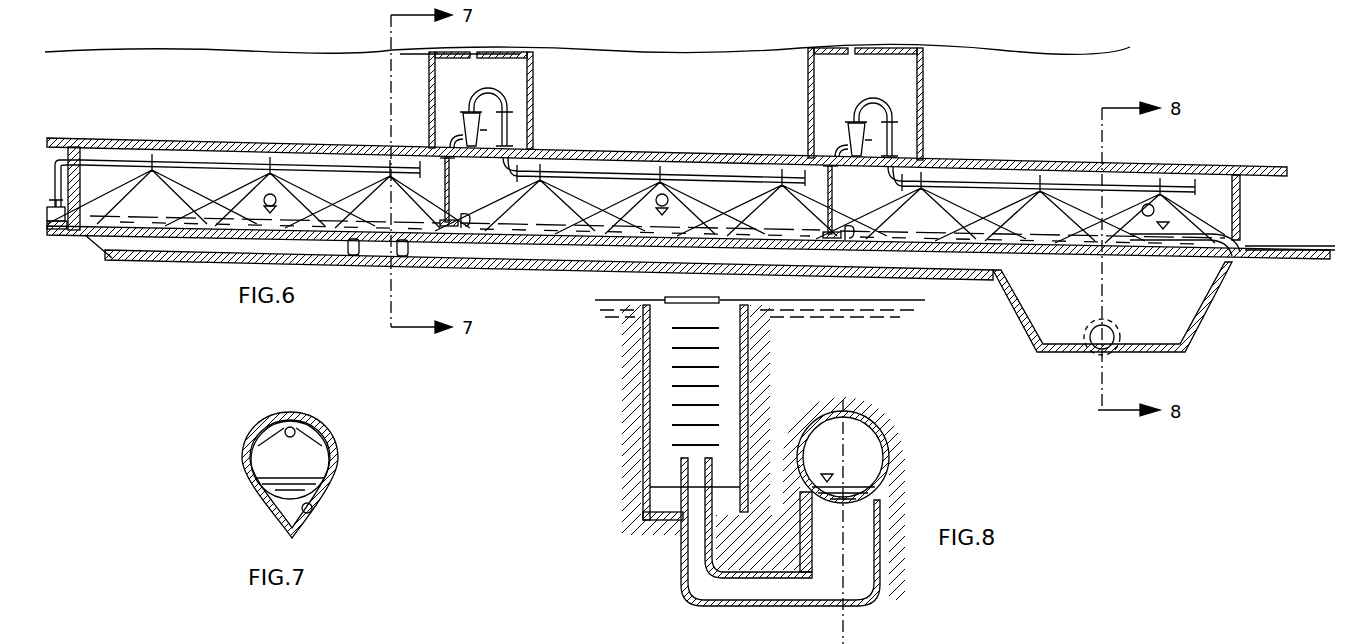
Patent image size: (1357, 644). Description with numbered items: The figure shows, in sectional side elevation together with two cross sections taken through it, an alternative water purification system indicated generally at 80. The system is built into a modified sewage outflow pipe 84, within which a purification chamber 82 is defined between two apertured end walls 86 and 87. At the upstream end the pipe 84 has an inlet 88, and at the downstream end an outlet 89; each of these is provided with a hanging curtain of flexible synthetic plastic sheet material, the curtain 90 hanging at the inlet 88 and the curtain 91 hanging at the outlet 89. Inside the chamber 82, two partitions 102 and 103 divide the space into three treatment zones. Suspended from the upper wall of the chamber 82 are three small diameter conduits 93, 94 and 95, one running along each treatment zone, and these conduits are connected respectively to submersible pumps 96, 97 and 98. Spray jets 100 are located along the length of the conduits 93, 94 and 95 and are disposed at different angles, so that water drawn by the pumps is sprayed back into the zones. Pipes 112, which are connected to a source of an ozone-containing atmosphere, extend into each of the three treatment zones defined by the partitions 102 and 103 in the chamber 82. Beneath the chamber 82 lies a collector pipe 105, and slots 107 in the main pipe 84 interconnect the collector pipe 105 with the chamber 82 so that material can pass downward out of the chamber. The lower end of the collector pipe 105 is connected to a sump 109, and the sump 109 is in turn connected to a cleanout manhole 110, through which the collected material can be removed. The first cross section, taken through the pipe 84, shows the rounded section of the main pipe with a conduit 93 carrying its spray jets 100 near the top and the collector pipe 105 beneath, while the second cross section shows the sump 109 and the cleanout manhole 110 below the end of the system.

In FIG. 6, the purification system 80 is at (640, 70).
In FIG. 6, the purification chamber 82 is at (272, 150).
In FIG. 6, the modified sewage outflow pipe 84 is at (355, 150).
In FIG. 7, the modified sewage outflow pipe 84 is at (338, 452).
In FIG. 6, the apertured end wall 86 is at (66, 152).
In FIG. 6, the apertured end wall 87 is at (1243, 198).
In FIG. 6, the inlet 88 is at (78, 176).
In FIG. 6, the outlet 89 is at (1243, 238).
In FIG. 6, the hanging curtain 90 is at (77, 230).
In FIG. 6, the hanging curtain 91 is at (1237, 260).
In FIG. 6, the small diameter conduit 93 is at (170, 160).
In FIG. 6, the small diameter conduit 94 is at (706, 170).
In FIG. 6, the small diameter conduit 95 is at (1045, 180).
In FIG. 6, the submersible pump 96 is at (50, 235).
In FIG. 6, the submersible pump 97 is at (452, 198).
In FIG. 6, the submersible pump 98 is at (832, 222).
In FIG. 6, the spray jet 100 is at (150, 157).
In FIG. 7, the spray jet 100 is at (298, 424).
In FIG. 6, the partition 102 is at (490, 222).
In FIG. 6, the partition 103 is at (865, 235).
In FIG. 6, the collector pipe 105 is at (567, 262).
In FIG. 7, the collector pipe 105 is at (311, 510).
In FIG. 6, the slot 107 is at (189, 239).
In FIG. 6, the sump 109 is at (1022, 328).
In FIG. 8, the sump 109 is at (866, 555).
In FIG. 8, the cleanout manhole 110 is at (657, 385).
In FIG. 6, the pipe 112 is at (276, 196).